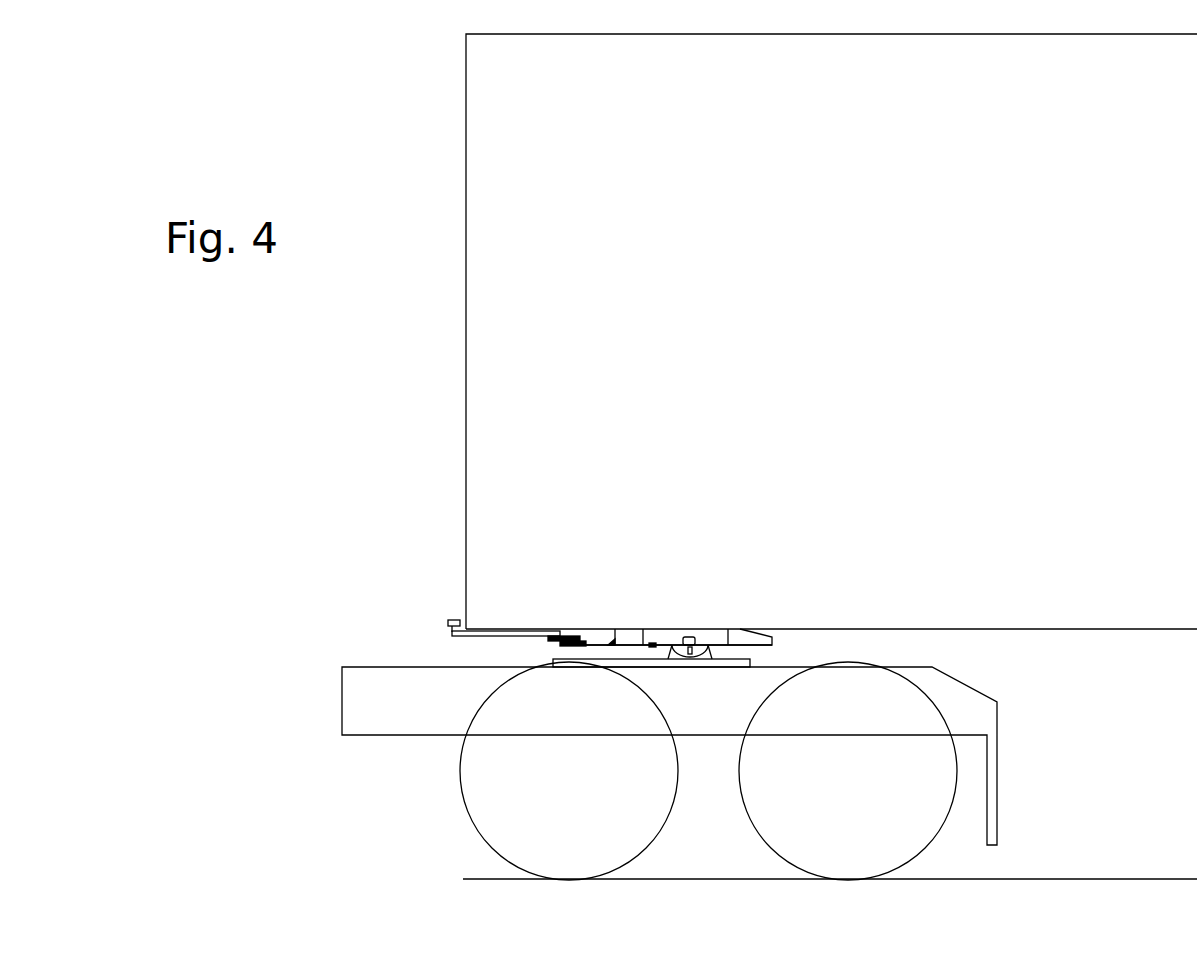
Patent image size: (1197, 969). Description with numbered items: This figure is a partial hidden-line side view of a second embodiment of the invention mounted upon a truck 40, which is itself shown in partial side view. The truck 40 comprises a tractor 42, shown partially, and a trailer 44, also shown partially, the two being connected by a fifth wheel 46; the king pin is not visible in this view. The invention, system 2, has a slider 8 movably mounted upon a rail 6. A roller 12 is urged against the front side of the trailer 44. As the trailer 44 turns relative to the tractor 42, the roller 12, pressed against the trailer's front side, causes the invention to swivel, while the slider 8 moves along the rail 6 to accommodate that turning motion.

The system 2 is at (682, 567).
The rail 6 is at (501, 557).
The slider 8 is at (602, 596).
The roller 12 is at (427, 601).
The truck 40 is at (690, 331).
The tractor 42 is at (692, 771).
The trailer 44 is at (1030, 253).
The fifth wheel 46 is at (772, 642).